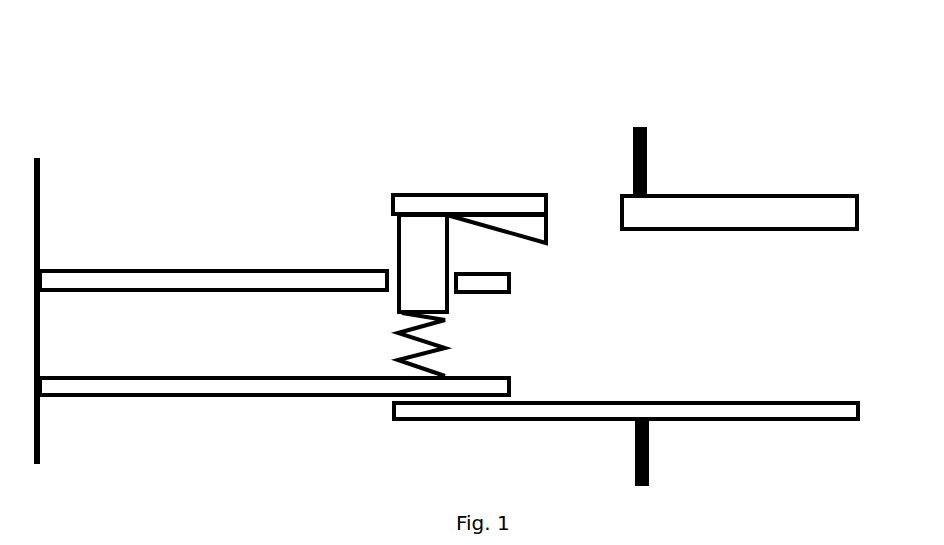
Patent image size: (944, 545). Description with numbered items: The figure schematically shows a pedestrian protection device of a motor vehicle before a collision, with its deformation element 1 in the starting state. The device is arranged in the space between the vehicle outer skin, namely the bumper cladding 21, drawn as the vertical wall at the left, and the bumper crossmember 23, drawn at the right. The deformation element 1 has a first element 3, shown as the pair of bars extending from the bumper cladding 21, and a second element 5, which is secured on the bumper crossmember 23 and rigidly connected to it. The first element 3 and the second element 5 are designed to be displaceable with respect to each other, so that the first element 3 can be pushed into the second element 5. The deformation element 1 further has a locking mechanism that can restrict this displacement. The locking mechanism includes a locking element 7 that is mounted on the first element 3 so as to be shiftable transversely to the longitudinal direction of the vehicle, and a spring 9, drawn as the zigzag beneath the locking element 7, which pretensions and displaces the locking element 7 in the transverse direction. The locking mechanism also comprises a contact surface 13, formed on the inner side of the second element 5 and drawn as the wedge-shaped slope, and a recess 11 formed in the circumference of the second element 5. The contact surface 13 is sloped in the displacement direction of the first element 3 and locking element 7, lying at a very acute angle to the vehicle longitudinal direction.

The deformation element 1 is at (329, 100).
The first element 3 is at (250, 282).
The second element 5 is at (468, 200).
The locking element 7 is at (425, 252).
The spring 9 is at (444, 350).
The recess 11 is at (582, 210).
The contact surface 13 is at (520, 202).
The bumper cladding 21 is at (40, 206).
The bumper crossmember 23 is at (646, 155).